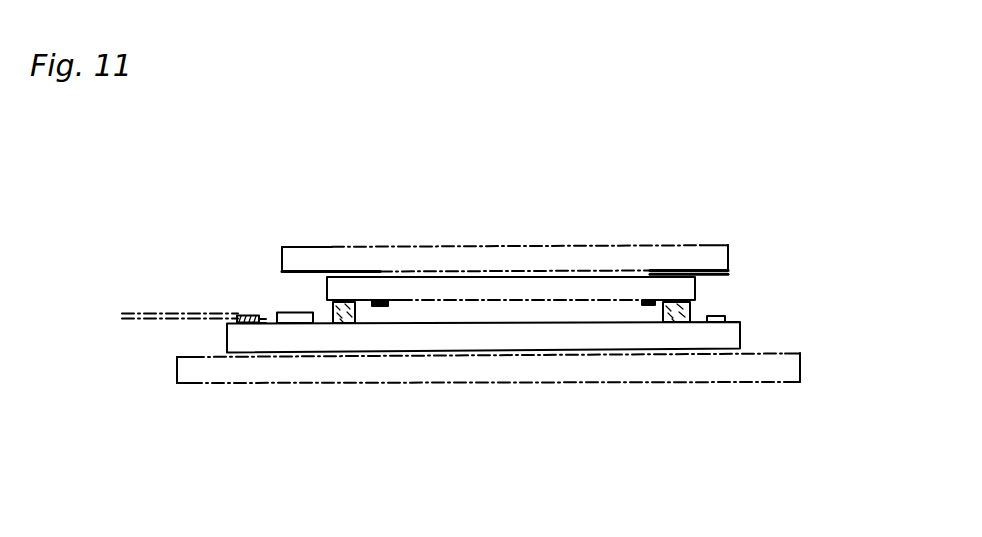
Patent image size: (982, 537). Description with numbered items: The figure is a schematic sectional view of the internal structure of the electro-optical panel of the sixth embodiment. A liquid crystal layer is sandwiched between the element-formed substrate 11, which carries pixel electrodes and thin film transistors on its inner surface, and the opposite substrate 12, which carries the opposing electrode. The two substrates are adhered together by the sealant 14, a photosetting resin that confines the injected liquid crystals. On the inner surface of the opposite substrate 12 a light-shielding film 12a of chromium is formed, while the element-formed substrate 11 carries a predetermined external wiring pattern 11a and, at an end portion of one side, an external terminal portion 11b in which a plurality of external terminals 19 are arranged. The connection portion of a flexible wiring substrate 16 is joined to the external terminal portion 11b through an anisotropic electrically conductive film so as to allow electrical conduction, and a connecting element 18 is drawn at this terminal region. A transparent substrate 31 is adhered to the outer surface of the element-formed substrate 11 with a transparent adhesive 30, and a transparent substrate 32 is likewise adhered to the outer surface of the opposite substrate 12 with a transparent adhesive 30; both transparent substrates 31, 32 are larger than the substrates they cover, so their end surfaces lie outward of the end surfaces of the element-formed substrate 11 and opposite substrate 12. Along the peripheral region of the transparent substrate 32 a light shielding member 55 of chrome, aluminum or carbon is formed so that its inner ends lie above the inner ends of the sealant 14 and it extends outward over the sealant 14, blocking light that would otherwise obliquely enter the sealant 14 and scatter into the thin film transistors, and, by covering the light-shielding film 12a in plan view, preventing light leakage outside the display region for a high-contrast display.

The element-formed substrate 11 is at (391, 350).
The external wiring pattern 11a is at (717, 316).
The external terminal portion 11b is at (270, 313).
The opposite substrate 12 is at (389, 277).
The light-shielding film 12a is at (378, 307).
The sealant 14 is at (670, 272).
The flexible wiring substrate 16 is at (163, 321).
The connection pad 18 is at (293, 312).
The external terminals 19 is at (247, 313).
The transparent adhesive 30 is at (472, 247).
The transparent substrate 31 is at (515, 383).
The transparent substrate 32 is at (588, 246).
The light shielding member 55 is at (318, 271).